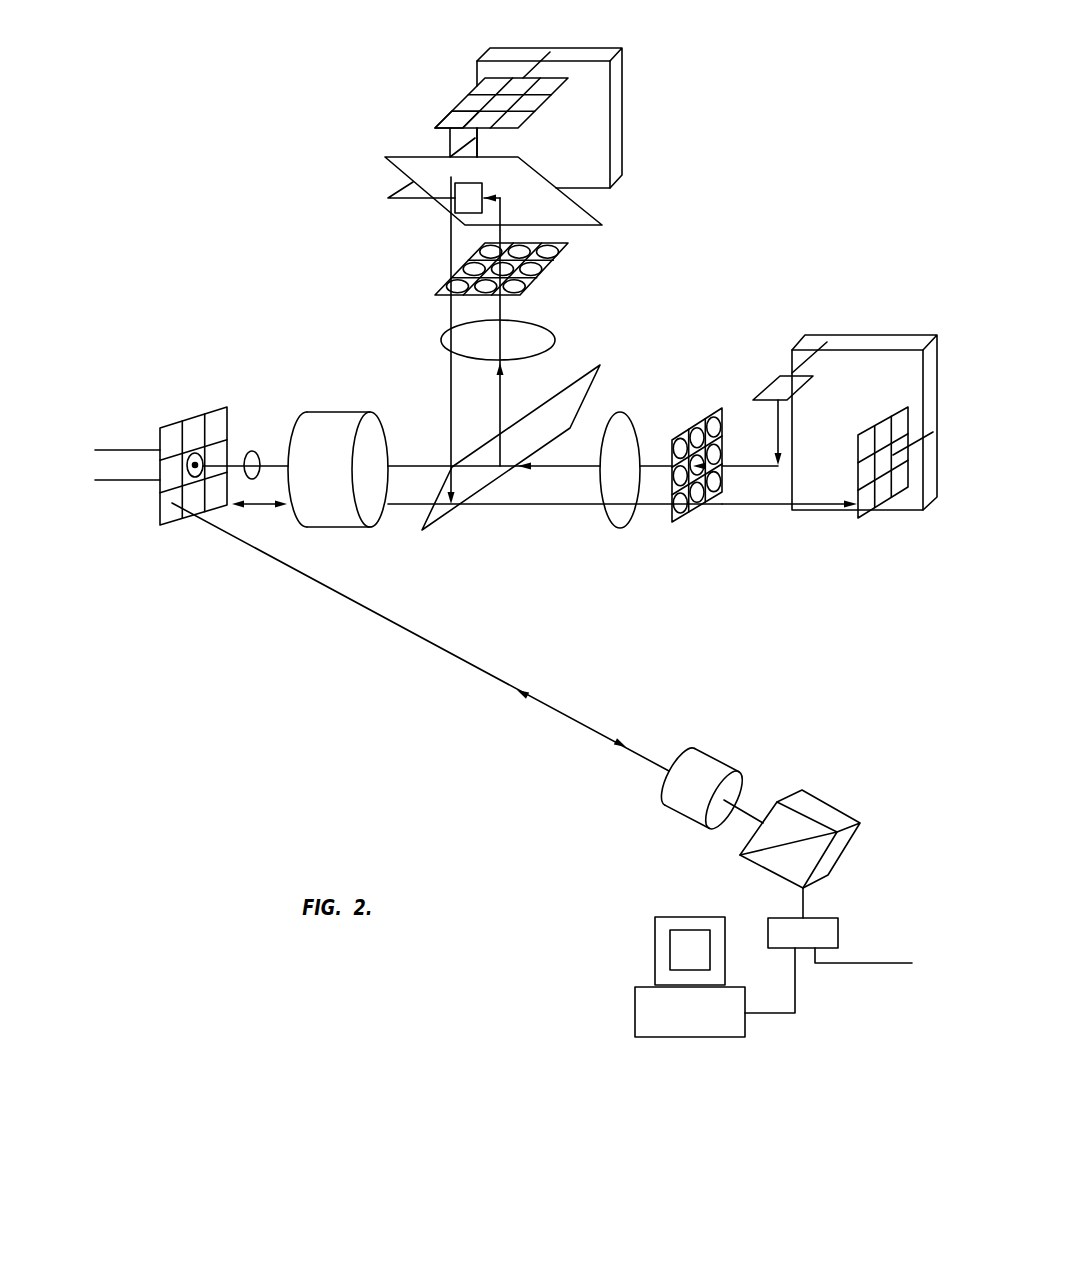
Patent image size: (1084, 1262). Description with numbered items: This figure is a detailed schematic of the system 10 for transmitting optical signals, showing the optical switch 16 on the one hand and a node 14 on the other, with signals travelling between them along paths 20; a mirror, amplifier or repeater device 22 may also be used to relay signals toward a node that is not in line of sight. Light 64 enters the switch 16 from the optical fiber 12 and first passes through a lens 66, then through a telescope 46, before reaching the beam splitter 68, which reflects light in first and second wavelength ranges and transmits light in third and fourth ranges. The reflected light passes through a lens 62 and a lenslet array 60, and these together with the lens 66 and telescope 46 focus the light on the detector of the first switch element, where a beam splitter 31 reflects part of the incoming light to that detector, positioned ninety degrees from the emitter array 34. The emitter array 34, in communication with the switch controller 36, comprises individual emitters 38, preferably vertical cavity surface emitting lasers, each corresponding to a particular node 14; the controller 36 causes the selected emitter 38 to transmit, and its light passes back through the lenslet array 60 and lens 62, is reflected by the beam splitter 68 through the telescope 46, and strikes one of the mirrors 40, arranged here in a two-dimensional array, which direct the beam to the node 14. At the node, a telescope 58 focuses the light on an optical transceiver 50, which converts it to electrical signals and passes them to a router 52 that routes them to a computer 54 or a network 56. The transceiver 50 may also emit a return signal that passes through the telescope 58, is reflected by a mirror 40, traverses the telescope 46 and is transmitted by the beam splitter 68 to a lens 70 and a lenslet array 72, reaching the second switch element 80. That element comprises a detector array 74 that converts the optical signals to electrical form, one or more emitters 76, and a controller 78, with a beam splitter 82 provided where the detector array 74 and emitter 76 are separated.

The system for transmitting optical signals 10 is at (155, 160).
The optical fiber 12 is at (132, 450).
The node 14 is at (853, 678).
The optical switch 16 is at (817, 103).
The paths 20 is at (376, 98).
The device 22 is at (465, 203).
The beam splitter 31 is at (590, 222).
The emitter array 34 is at (458, 87).
The switch controller 36 is at (592, 52).
The emitters 38 is at (452, 110).
The mirrors 40 is at (170, 425).
The telescope 46 is at (337, 412).
The optical transceiver 50 is at (840, 813).
The router 52 is at (828, 927).
The computer 54 is at (653, 1037).
The network 56 is at (870, 965).
The telescope 58 is at (722, 755).
The lenslet array 60 is at (558, 253).
The lens 62 is at (550, 330).
The light 64 is at (233, 460).
The lens 66 is at (257, 455).
The beam splitter 68 is at (602, 385).
The lens 70 is at (618, 522).
The lenslet array 72 is at (673, 522).
The detector array 74 is at (858, 513).
The emitter 76 is at (772, 382).
The controller 78 is at (867, 340).
The second switch element 80 is at (846, 302).
The beam splitter 82 is at (758, 482).